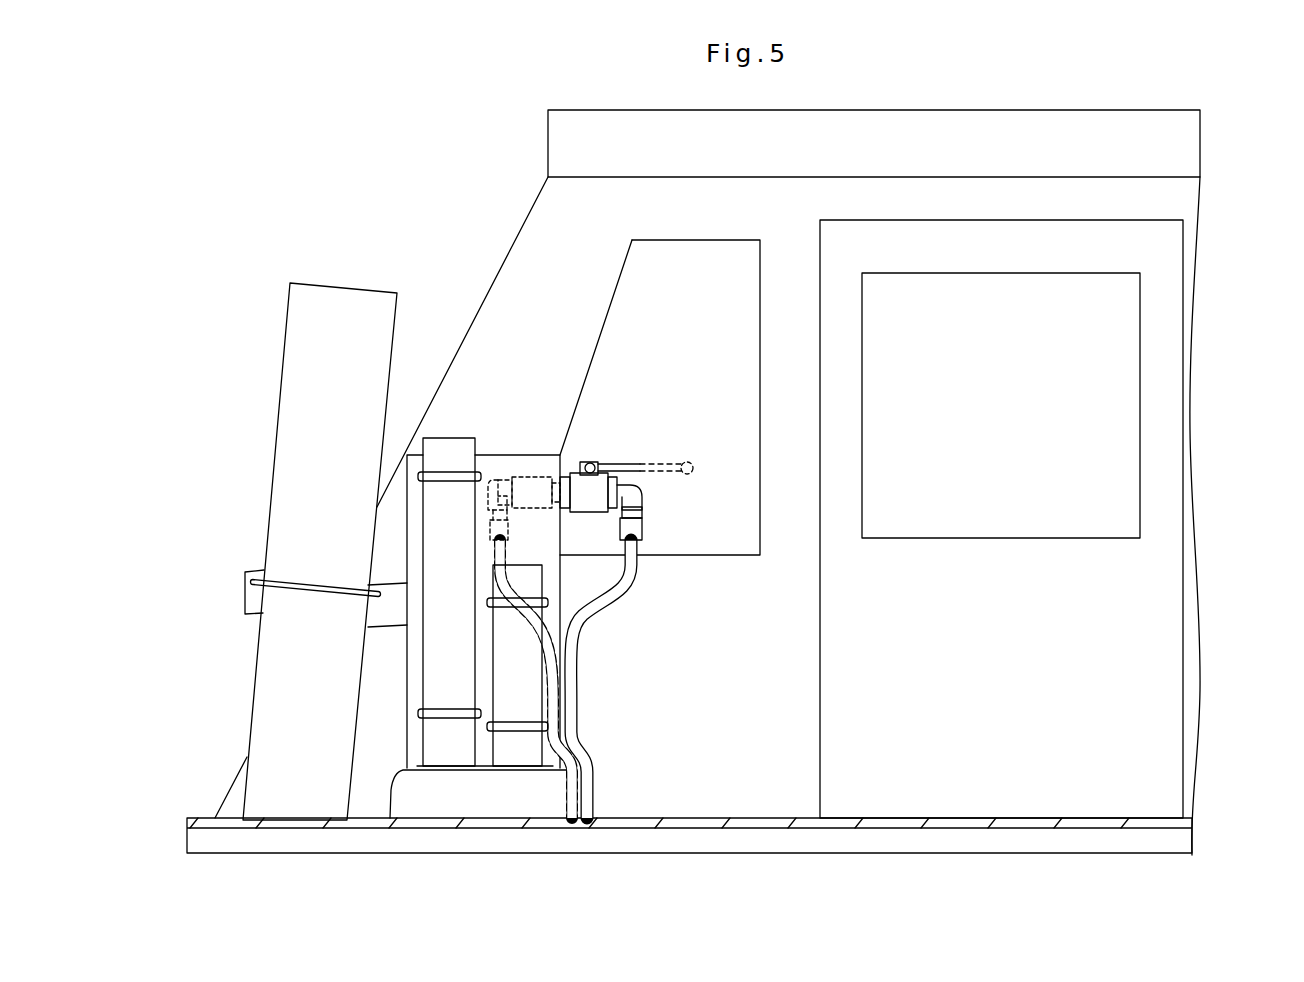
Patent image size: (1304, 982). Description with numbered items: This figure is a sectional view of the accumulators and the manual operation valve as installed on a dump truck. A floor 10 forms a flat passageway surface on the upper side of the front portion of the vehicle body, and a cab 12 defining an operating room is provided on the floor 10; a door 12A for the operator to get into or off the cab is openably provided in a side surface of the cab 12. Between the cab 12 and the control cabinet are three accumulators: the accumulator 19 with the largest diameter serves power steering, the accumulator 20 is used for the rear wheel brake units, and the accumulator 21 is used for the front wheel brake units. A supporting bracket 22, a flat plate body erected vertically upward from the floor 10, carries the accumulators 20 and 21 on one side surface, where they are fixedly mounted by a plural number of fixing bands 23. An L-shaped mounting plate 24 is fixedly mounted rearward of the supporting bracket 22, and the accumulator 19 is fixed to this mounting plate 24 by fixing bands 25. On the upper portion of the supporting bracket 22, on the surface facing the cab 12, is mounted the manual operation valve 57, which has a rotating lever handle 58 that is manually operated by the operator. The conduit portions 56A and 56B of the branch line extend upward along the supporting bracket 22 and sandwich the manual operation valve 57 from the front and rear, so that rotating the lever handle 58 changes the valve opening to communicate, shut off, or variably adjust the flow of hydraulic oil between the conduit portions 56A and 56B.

The floor 10 is at (946, 824).
The cab 12 is at (1183, 151).
The door 12A is at (1161, 579).
The accumulator 19 is at (313, 328).
The accumulator 20 is at (447, 640).
The accumulator 21 is at (508, 682).
The supporting bracket 22 is at (492, 460).
The fixing bands 23 is at (447, 473).
The mounting plate 24 is at (252, 598).
The fixing bands 25 is at (297, 580).
The conduit portion 56A is at (635, 564).
The conduit portion 56B is at (493, 552).
The manual operation valve 57 is at (577, 488).
The lever handle 58 is at (586, 462).